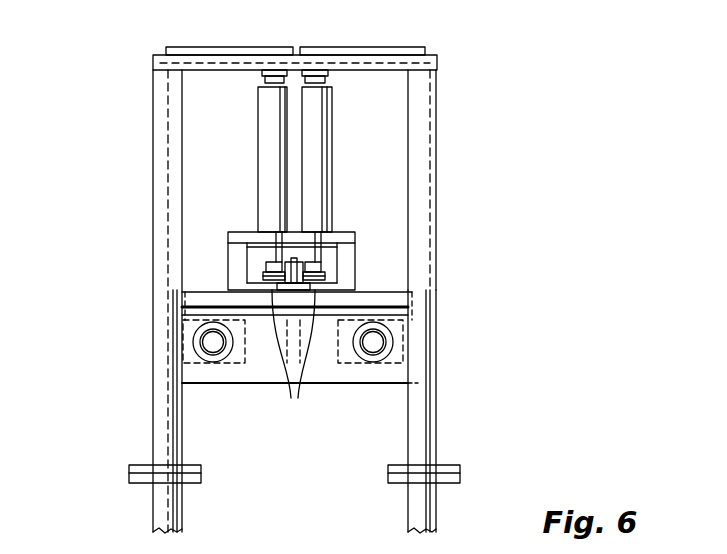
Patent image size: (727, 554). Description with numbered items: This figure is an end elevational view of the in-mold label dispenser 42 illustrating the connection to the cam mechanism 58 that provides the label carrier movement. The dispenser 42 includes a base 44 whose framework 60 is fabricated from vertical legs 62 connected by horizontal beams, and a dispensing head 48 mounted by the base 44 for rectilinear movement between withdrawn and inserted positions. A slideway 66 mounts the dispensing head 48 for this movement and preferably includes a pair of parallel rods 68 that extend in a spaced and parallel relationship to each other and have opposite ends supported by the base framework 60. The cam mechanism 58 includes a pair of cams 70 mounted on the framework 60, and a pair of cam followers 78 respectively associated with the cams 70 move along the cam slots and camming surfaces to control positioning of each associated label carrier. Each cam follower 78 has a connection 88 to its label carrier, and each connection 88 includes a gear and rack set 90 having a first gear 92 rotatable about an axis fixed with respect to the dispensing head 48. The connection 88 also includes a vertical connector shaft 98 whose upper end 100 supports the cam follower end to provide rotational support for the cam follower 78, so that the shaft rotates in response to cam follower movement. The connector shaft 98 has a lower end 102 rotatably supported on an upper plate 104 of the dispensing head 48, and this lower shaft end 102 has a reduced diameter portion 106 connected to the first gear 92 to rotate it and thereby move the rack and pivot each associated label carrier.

The in-mold label dispenser 42 is at (563, 125).
The base 44 is at (441, 212).
The dispensing head 48 is at (200, 290).
The cam mechanism 58 is at (352, 118).
The framework 60 is at (439, 430).
The vertical legs 62 is at (156, 423).
The slideway 66 is at (192, 338).
The parallel rods 68 is at (213, 352).
The cams 70 is at (290, 46).
The cam followers 78 is at (262, 72).
The connection 88 is at (245, 123).
The gear and rack set 90 is at (246, 268).
The first gear 92 is at (293, 358).
The vertical connector shaft 98 is at (308, 147).
The upper end 100 is at (262, 82).
The lower end 102 is at (305, 213).
The upper plate 104 is at (345, 232).
The reduced diameter portion 106 is at (303, 250).